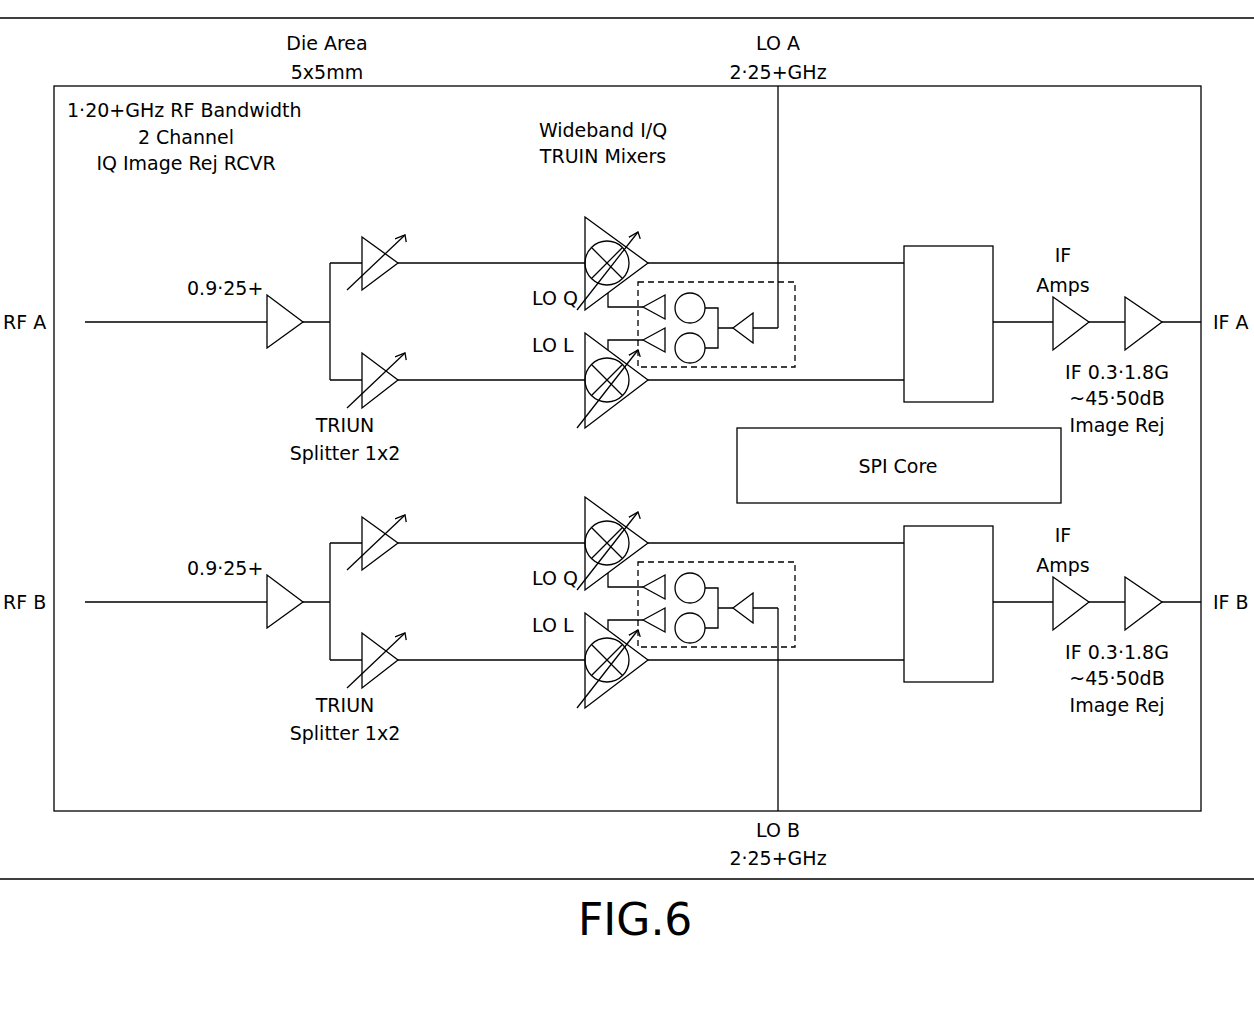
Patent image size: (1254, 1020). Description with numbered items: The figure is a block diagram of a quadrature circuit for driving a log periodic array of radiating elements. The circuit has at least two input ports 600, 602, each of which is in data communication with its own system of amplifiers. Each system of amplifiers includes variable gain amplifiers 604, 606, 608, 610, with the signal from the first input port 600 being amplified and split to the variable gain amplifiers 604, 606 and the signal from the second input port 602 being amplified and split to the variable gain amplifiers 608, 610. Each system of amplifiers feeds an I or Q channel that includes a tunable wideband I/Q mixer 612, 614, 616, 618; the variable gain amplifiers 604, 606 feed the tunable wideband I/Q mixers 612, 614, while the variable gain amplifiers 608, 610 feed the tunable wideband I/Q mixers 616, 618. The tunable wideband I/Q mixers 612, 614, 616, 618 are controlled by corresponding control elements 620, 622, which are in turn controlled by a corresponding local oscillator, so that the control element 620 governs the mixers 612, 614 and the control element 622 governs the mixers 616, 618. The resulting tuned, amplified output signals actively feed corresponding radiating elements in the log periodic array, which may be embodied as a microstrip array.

The input port 600 is at (150, 320).
The input port 602 is at (150, 600).
The variable gain amplifier 604 is at (372, 238).
The variable gain amplifier 606 is at (378, 393).
The variable gain amplifier 608 is at (378, 520).
The variable gain amplifier 610 is at (378, 673).
The tunable wideband I/Q mixer 612 is at (607, 232).
The tunable wideband I/Q mixer 614 is at (605, 413).
The tunable wideband I/Q mixer 616 is at (600, 503).
The tunable wideband I/Q mixer 618 is at (615, 688).
The control element 620 is at (795, 312).
The control element 622 is at (795, 600).